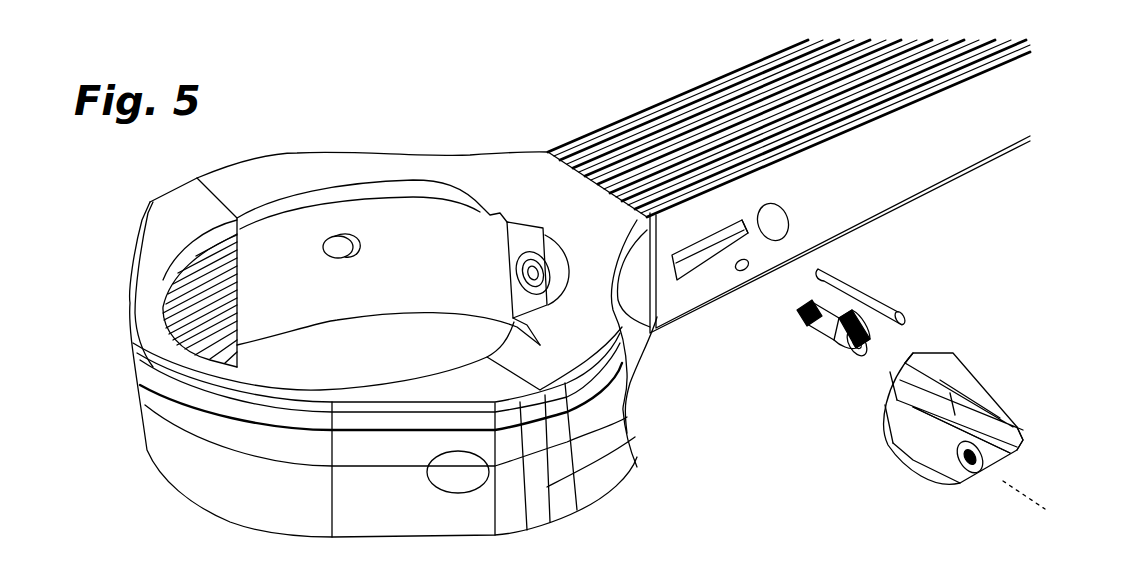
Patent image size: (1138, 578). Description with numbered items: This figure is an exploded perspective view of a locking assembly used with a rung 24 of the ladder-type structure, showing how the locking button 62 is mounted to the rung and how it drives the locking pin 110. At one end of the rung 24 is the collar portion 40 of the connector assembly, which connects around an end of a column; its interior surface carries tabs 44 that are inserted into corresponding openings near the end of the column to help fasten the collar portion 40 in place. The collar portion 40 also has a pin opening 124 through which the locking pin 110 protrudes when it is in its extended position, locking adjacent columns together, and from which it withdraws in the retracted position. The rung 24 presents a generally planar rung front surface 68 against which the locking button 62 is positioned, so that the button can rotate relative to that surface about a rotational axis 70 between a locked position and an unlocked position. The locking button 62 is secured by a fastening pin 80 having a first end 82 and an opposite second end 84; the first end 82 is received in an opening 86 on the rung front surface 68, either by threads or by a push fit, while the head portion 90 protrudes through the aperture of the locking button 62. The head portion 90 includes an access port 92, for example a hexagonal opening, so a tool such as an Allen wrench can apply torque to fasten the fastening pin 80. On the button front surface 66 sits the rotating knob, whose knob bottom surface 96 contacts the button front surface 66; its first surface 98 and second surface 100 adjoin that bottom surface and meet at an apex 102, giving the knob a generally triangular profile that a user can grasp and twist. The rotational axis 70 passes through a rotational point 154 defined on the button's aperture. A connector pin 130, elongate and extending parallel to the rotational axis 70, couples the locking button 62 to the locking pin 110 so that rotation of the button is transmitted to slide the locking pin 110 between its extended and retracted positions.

The rung 24 is at (620, 128).
The collar portion 40 is at (297, 166).
The tabs 44 is at (185, 292).
The locking button 62 is at (696, 574).
The button front surface 66 is at (970, 443).
The rung front surface 68 is at (916, 181).
The rotational axis 70 is at (1003, 481).
The fastening pin 80 is at (824, 360).
The first end 82 is at (800, 316).
The second end 84 is at (846, 365).
The opening 86 is at (752, 262).
The head portion 90 is at (866, 342).
The access port 92 is at (856, 352).
The knob bottom surface 96 is at (976, 401).
The first surface 98 is at (892, 418).
The second surface 100 is at (1021, 431).
The apex 102 is at (958, 414).
The locking pin 110 is at (528, 280).
The pin opening 124 is at (516, 235).
The connector pin 130 is at (868, 300).
The rotational point 154 is at (960, 485).